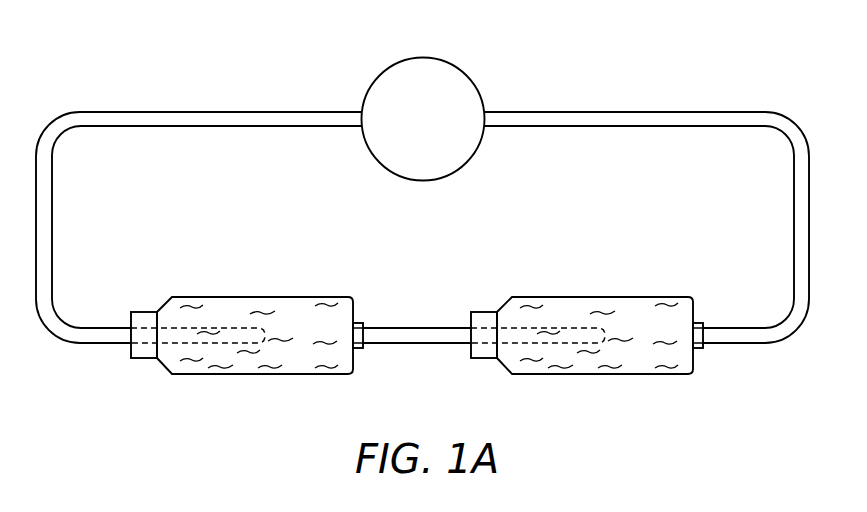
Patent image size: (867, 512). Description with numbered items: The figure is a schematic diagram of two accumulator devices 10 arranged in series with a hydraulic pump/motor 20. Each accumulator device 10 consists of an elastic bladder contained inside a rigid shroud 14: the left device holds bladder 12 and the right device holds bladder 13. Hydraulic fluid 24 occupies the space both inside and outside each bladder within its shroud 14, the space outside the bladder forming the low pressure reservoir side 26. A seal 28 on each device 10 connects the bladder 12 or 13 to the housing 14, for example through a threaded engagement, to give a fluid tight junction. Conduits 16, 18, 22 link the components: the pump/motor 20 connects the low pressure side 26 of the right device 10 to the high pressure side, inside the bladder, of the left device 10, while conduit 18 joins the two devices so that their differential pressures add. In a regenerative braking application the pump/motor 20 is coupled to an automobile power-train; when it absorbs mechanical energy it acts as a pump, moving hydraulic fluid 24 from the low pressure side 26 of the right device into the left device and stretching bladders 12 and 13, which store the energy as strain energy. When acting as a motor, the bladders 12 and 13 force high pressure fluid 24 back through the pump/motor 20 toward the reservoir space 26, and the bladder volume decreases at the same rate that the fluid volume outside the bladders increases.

The accumulator device 10 is at (392, 331).
The elastic bladder 12 is at (227, 325).
The elastic bladder 13 is at (567, 325).
The rigid shroud 14 is at (202, 375).
The conduit 16 is at (574, 111).
The conduit 18 is at (414, 327).
The pump/motor 20 is at (414, 57).
The conduit 22 is at (218, 111).
The hydraulic fluid 24 is at (320, 373).
The low pressure reservoir side 26 is at (337, 341).
The seal 28 is at (138, 360).